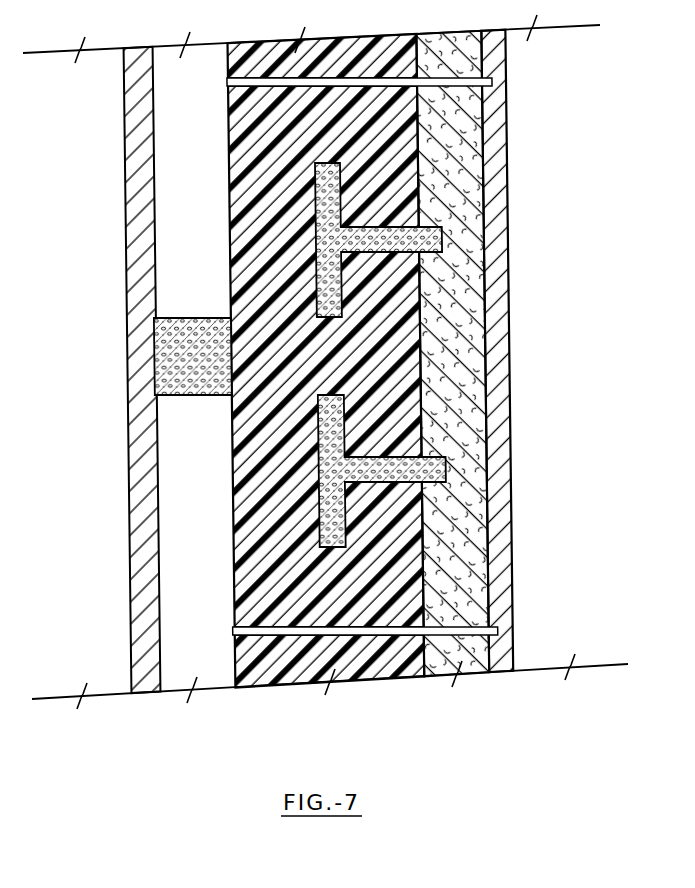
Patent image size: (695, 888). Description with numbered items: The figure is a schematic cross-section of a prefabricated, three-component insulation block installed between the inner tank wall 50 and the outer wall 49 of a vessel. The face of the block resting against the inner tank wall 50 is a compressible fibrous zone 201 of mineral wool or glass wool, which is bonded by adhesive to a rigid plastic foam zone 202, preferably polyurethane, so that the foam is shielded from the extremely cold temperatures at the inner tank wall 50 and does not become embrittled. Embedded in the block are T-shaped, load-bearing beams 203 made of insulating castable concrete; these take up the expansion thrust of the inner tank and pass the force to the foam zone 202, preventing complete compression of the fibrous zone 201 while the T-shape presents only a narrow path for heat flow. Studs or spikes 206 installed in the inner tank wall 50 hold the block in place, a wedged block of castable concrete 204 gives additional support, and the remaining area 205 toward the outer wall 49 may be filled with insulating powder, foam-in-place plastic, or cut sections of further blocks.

The outer wall 49 is at (127, 232).
The inner tank wall 50 is at (496, 191).
The fibrous zone 201 is at (469, 143).
The foam zone 202 is at (238, 470).
The T-shaped load-bearing beams 203 is at (331, 317).
The block of castable concrete 204 is at (193, 326).
The area 205 is at (206, 248).
The studs or spikes 206 is at (497, 629).